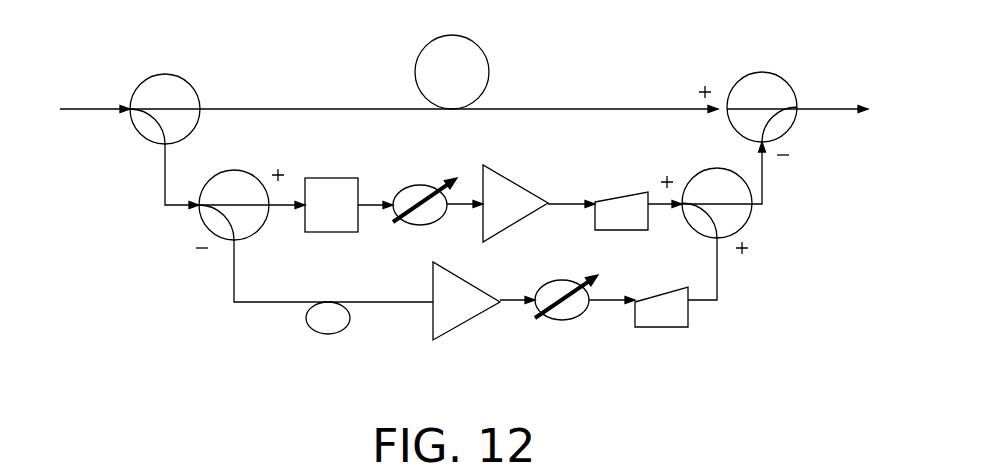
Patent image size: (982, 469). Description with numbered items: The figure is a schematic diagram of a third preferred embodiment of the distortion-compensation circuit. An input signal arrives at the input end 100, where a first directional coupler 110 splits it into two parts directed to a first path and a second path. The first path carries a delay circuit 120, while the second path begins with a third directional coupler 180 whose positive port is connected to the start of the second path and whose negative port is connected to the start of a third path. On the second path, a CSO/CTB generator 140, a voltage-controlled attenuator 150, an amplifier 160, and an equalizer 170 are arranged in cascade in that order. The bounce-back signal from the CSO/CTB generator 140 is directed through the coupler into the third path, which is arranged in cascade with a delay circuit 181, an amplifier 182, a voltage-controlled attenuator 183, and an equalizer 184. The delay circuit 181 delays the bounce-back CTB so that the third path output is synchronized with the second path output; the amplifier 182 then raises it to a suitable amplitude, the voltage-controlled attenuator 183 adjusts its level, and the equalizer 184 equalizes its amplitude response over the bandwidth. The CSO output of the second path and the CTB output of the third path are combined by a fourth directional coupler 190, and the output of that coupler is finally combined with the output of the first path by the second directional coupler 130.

The input end 100 is at (83, 108).
The first directional coupler 110 is at (165, 75).
The delay circuit 120 is at (480, 85).
The second directional coupler 130 is at (795, 45).
The CSO/CTB generator 140 is at (337, 232).
The voltage-controlled attenuator 150 is at (427, 183).
The amplifier 160 is at (579, 267).
The equalizer 170 is at (630, 190).
The third directional coupler 180 is at (279, 144).
The delay circuit 181 is at (410, 381).
The amplifier 182 is at (537, 375).
The voltage-controlled attenuator 183 is at (582, 317).
The equalizer 184 is at (690, 315).
The fourth directional coupler 190 is at (733, 180).